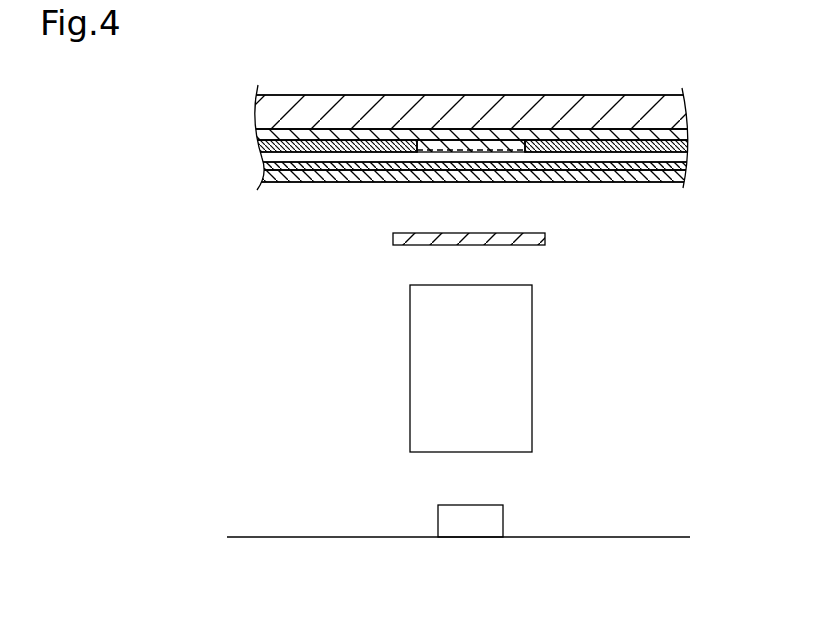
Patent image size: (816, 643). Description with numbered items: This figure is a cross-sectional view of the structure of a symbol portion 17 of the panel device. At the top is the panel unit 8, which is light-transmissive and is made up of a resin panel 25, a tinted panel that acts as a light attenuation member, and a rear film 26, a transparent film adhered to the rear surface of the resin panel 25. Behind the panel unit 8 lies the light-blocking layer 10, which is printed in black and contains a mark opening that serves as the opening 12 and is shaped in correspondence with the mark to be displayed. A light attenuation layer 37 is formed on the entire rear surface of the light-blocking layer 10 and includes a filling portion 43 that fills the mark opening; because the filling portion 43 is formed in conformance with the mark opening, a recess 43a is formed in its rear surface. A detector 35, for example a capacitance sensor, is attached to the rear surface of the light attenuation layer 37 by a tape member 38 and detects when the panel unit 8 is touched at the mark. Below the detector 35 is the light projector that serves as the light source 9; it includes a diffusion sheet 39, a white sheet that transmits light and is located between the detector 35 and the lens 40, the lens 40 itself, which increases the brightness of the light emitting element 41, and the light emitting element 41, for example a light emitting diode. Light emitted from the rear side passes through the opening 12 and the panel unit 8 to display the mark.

The symbol portion 17 is at (235, 83).
The panel unit 8 is at (480, 79).
The resin panel 25 is at (371, 98).
The rear film 26 is at (421, 140).
The filling portion 43 is at (463, 135).
The recess 43a is at (510, 150).
The opening 12 is at (505, 153).
The light-blocking layer 10 is at (263, 154).
The tape member 38 is at (414, 153).
The light attenuation layer 37 is at (354, 165).
The detector 35 is at (281, 188).
The diffusion sheet 39 is at (410, 246).
The lens 40 is at (410, 367).
The light emitting element 41 is at (437, 522).
The light source 9 is at (482, 385).